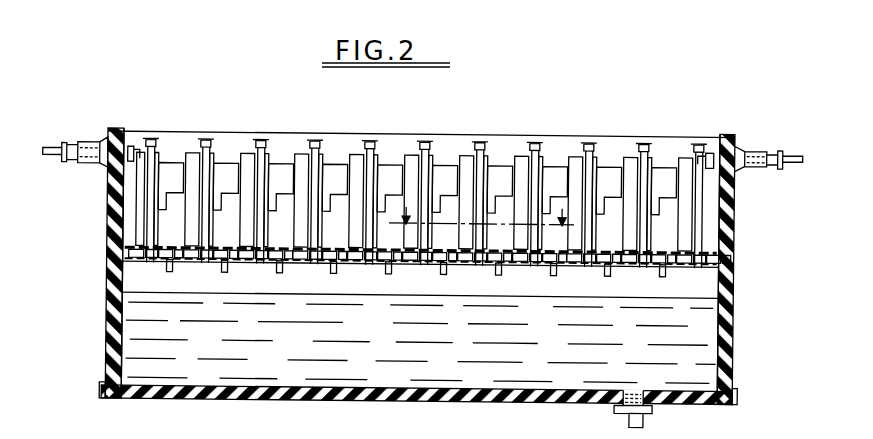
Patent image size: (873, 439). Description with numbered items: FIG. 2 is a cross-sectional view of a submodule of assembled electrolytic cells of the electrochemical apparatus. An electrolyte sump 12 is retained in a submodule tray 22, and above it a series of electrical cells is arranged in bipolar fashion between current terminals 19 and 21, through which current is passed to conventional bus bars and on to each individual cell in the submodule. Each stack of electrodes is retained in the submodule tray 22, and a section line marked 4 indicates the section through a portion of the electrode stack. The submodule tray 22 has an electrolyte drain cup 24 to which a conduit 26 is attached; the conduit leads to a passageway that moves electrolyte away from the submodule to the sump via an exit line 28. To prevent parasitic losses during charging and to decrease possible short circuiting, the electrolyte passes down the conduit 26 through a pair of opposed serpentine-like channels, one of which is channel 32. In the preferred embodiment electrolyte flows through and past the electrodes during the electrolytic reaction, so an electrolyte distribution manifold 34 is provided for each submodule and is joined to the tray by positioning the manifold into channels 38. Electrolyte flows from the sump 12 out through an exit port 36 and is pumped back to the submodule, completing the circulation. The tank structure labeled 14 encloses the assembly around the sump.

The electrolyte sump 12 is at (300, 355).
The tank 14 is at (104, 338).
The current terminal 19 is at (50, 147).
The current terminal 21 is at (795, 145).
The submodule tray 22 is at (182, 230).
The electrolyte drain cup 24 is at (165, 178).
The conduit 26 is at (185, 232).
The exit line 28 is at (169, 268).
The serpentine like channel 32 is at (226, 252).
The electrolyte distribution manifold 34 is at (260, 137).
The exit port 36 is at (645, 418).
The channels 38 is at (257, 201).
The section line 4- 4 is at (481, 228).